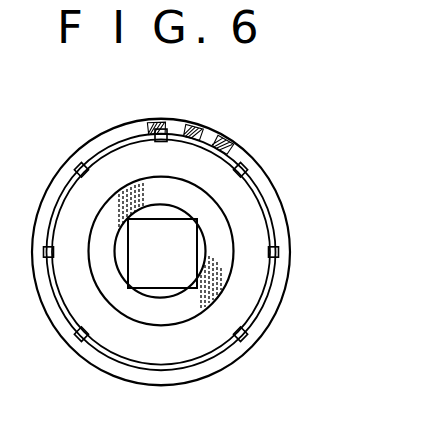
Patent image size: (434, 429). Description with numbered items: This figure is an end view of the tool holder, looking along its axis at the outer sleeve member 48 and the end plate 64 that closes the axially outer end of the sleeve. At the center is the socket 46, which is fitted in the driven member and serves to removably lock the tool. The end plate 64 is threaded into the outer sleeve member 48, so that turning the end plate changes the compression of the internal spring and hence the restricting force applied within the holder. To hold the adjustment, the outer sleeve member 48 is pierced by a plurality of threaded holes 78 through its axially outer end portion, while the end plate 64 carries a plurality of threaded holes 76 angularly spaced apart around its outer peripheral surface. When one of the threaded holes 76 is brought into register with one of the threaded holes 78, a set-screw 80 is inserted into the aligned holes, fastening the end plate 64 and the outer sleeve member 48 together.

The socket 46 is at (187, 310).
The outer sleeve member 48 is at (283, 225).
The end plate 64 is at (259, 293).
The threaded holes 76 is at (247, 166).
The threaded holes 78 is at (194, 124).
The set-screw 80 is at (163, 127).